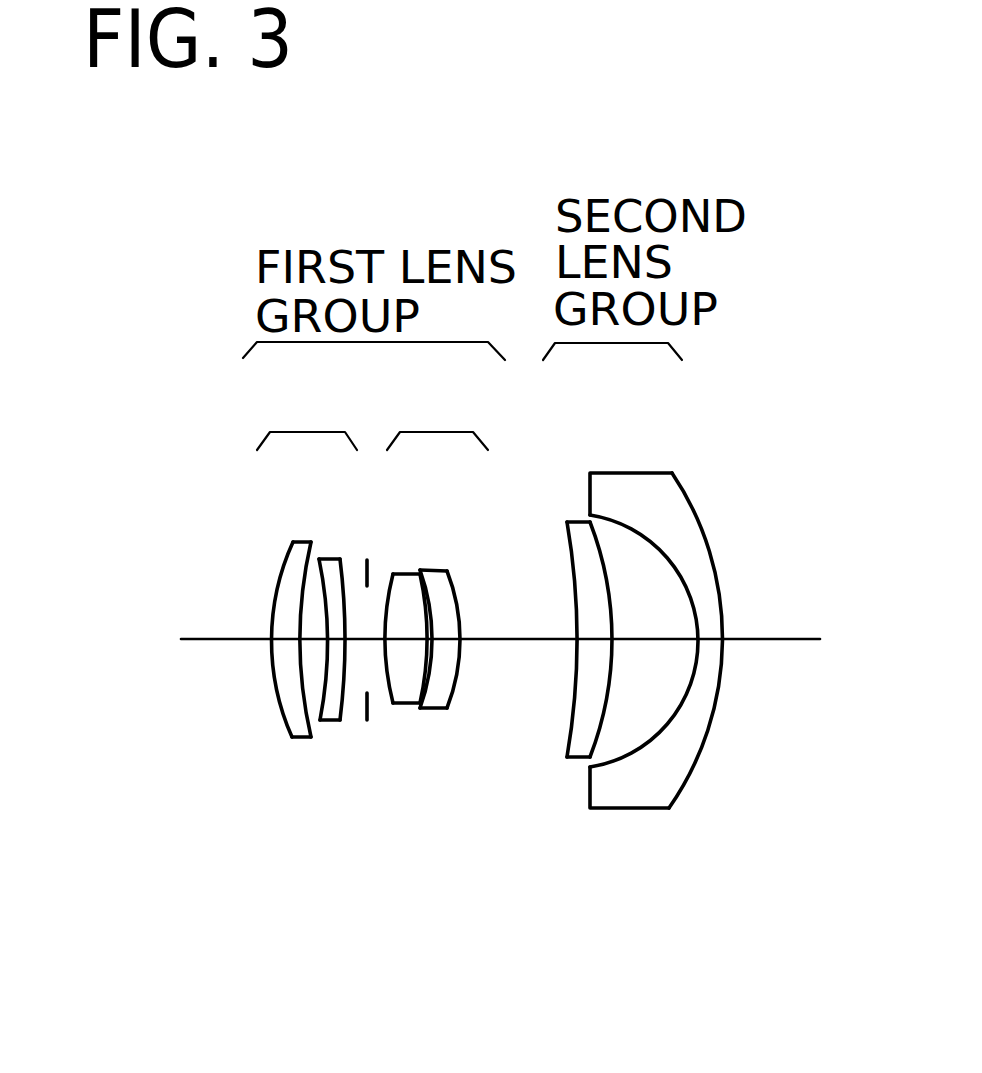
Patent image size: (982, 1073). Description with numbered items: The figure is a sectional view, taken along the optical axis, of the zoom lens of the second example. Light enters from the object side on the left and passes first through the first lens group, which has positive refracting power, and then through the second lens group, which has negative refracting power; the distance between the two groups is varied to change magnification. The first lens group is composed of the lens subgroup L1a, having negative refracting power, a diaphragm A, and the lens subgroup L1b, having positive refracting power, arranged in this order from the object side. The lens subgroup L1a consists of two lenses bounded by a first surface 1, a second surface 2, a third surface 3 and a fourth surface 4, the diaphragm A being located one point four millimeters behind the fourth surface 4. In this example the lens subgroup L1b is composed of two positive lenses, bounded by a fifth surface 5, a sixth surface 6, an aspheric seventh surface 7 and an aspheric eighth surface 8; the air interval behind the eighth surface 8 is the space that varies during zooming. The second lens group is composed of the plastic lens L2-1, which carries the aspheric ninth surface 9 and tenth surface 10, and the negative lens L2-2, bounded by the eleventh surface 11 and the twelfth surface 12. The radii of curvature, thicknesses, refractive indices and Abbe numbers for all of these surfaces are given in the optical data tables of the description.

The first surface 1 is at (275, 682).
The second surface 2 is at (300, 687).
The third surface 3 is at (318, 713).
The fourth surface 4 is at (345, 700).
The fifth surface 5 is at (388, 695).
The sixth surface 6 is at (420, 690).
The seventh surface 7 is at (442, 695).
The eighth surface 8 is at (458, 703).
The ninth surface 9 is at (567, 740).
The tenth surface 10 is at (600, 713).
The eleventh surface 11 is at (690, 688).
The twelfth surface 12 is at (717, 697).
The diaphragm A is at (368, 573).
The 1a lens subgroup L1a is at (267, 637).
The 1b lens subgroup L1b is at (446, 637).
The (2-1)th lens L2-1 is at (568, 522).
The (2-2)th lens L2-2 is at (640, 473).